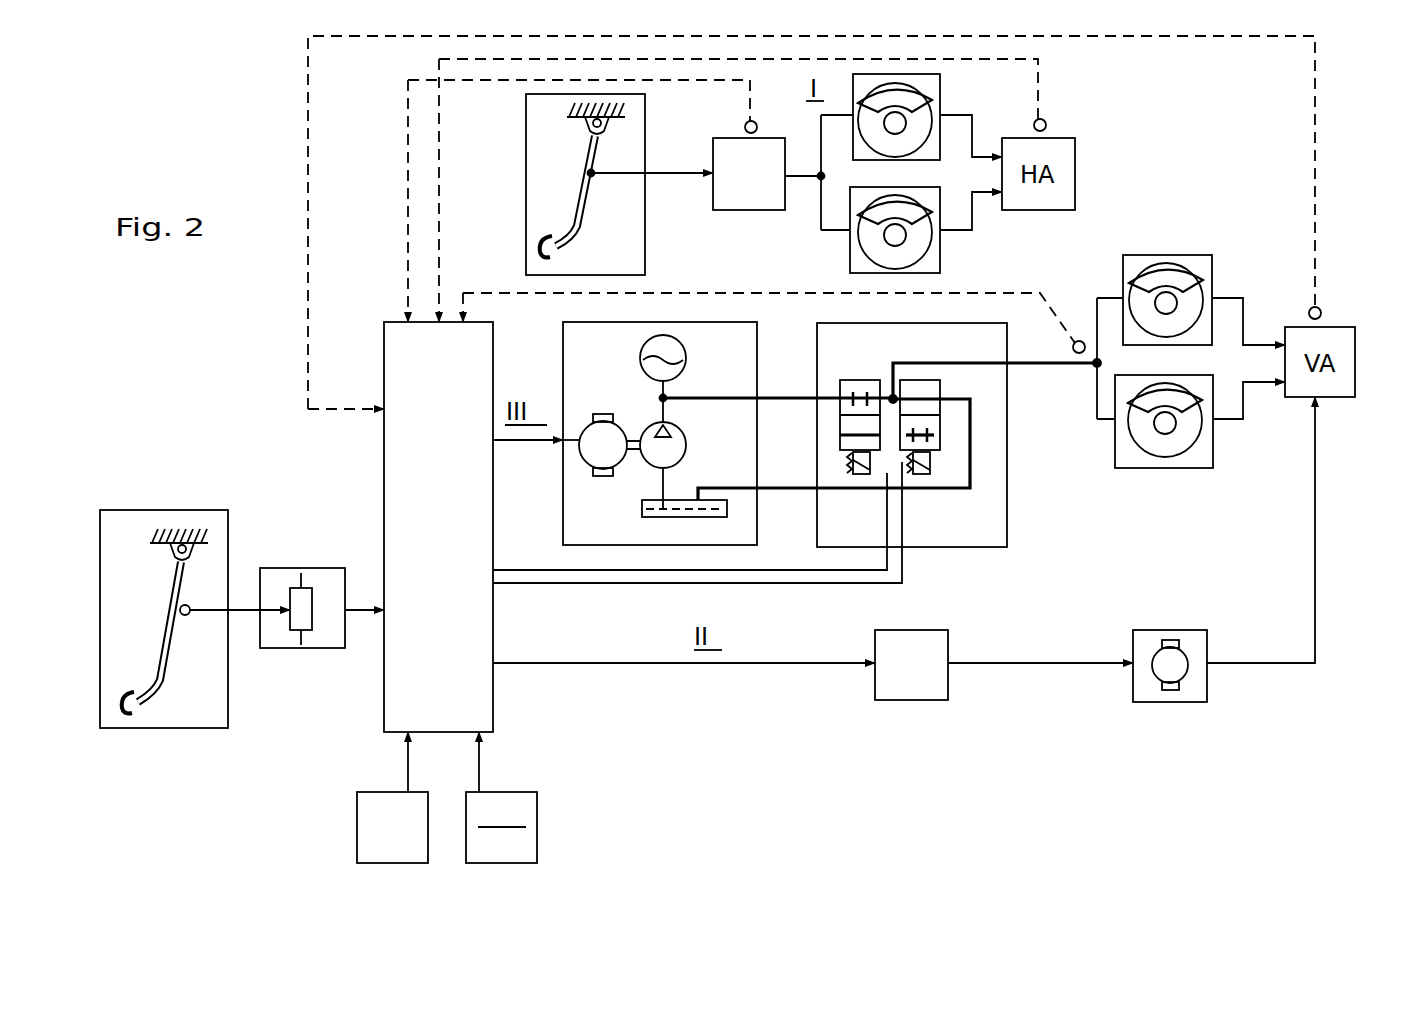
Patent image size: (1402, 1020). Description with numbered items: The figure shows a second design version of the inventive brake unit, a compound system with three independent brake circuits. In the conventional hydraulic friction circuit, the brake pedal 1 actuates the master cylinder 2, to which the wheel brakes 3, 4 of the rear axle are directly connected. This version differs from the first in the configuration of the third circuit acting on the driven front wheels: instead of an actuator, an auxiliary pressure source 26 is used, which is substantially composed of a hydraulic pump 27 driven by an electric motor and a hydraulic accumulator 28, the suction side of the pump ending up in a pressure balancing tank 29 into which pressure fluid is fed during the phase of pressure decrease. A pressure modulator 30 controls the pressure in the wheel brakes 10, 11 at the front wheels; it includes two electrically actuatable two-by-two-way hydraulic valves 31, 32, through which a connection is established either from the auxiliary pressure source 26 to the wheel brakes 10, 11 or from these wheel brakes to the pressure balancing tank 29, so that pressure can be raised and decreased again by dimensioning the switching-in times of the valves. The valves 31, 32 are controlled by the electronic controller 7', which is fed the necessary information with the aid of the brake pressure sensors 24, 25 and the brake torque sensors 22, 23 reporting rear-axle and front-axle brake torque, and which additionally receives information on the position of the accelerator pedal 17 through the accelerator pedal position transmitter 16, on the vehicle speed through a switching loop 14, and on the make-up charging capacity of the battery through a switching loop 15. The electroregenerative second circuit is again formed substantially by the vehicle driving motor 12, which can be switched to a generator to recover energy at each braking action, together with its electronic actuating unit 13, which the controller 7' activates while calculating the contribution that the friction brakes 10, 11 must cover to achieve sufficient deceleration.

The brake pedal 1 is at (645, 248).
The master cylinder 2 is at (768, 210).
The wheel brake 3 is at (940, 87).
The wheel brake 4 is at (940, 262).
The electronic controller 7' is at (413, 527).
The wheel brake 10 is at (1212, 272).
The wheel brake 11 is at (1175, 468).
The vehicle driving motor 12 is at (1163, 630).
The electronic actuating unit 13 is at (948, 640).
The switching loop 14 is at (357, 828).
The switching loop 15 is at (537, 830).
The accelerator pedal position transmitter 16 is at (305, 648).
The accelerator pedal 17 is at (175, 728).
The brake torque sensor 22 is at (1046, 123).
The brake torque sensor 23 is at (1320, 307).
The pressure sensor 24 is at (745, 122).
The pressure sensor 25 is at (1073, 345).
The auxiliary pressure source 26 is at (634, 433).
The hydraulic pump 27 is at (686, 450).
The hydraulic accumulator 28 is at (686, 365).
The pressure balancing tank 29 is at (642, 507).
The pressure modulator 30 is at (946, 435).
The 2/2-way valve 31 is at (855, 380).
The 2/2-way valve 32 is at (920, 395).